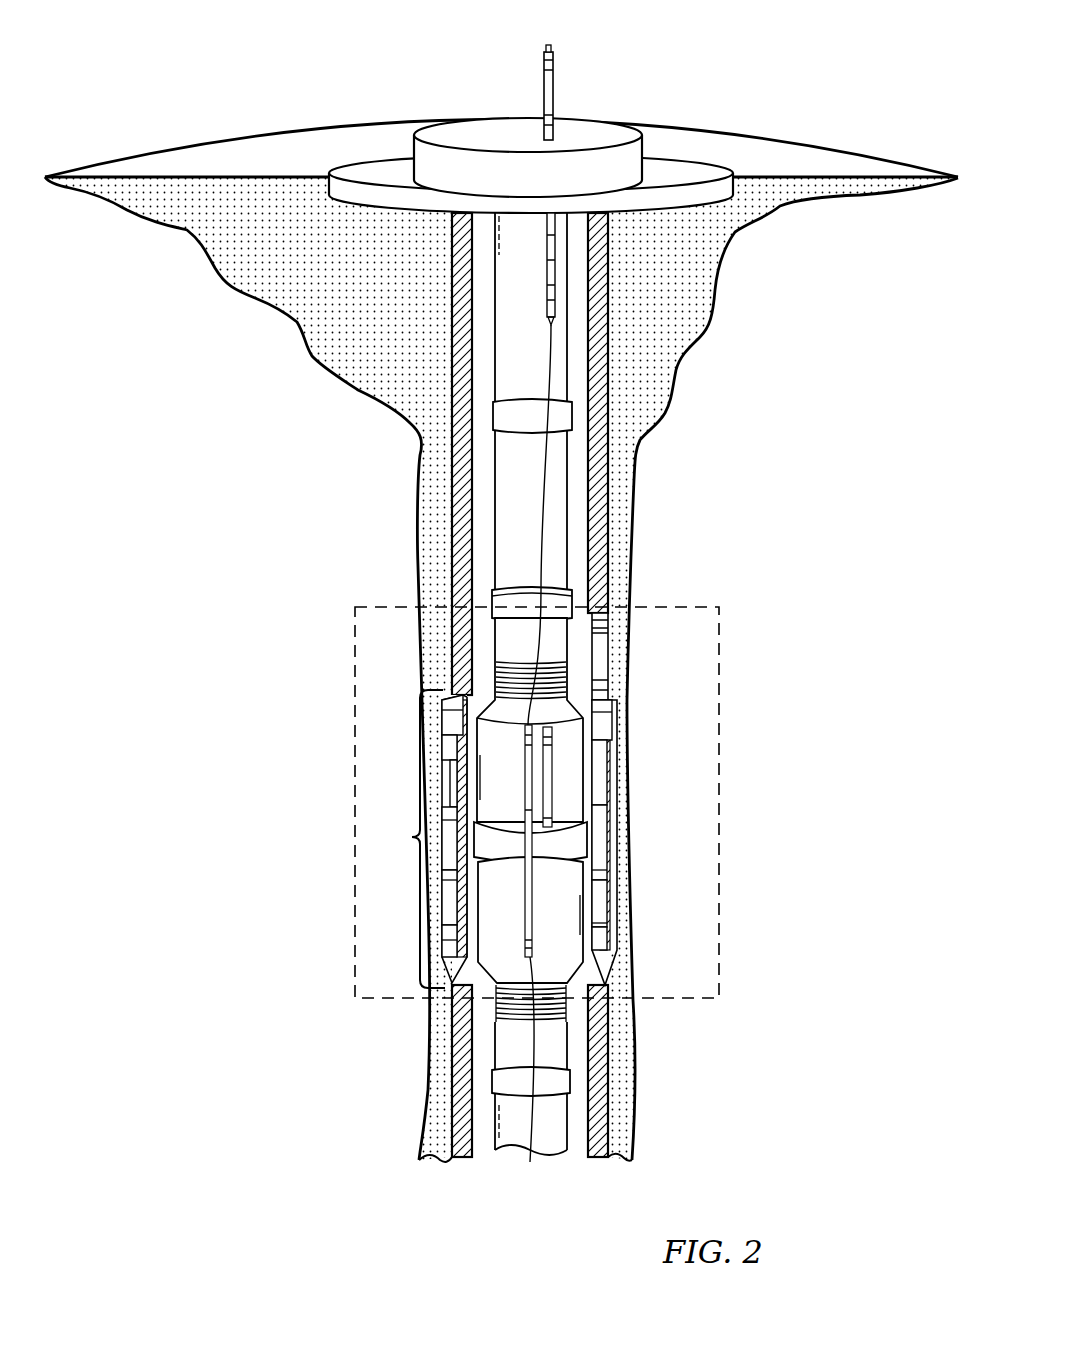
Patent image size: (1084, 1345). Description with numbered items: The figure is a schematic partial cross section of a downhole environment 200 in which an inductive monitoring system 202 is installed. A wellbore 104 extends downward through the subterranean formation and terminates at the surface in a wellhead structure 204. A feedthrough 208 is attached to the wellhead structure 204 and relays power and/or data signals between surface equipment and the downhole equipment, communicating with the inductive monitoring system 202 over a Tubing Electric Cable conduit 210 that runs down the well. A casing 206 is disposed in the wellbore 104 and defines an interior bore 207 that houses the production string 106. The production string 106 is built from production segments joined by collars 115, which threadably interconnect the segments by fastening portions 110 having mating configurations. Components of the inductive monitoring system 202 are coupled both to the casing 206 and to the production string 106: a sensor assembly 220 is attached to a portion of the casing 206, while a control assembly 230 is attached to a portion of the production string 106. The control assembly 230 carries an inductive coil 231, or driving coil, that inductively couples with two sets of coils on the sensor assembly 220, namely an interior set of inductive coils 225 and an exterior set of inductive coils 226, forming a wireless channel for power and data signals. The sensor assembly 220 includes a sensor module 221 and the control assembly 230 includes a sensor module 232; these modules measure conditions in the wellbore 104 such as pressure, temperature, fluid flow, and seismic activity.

The downhole environment 200 is at (818, 41).
The wellbore 104 is at (337, 245).
The wellhead structure 204 is at (682, 166).
The feedthrough 208 is at (553, 86).
The casing 206 is at (461, 270).
The interior bore 207 is at (481, 318).
The production string 106 is at (506, 358).
The Tubing Electric Cable conduit 210 is at (548, 357).
The collar 115 is at (506, 418).
The inductive monitoring system 202 is at (709, 634).
The sensor module 221 is at (603, 668).
The sensor module 232 is at (548, 752).
The control assembly 230 is at (565, 787).
The inductive coil 231 is at (527, 847).
The exterior set of inductive coils 226 is at (610, 890).
The interior set of inductive coils 225 is at (610, 933).
The sensor assembly 220 is at (414, 839).
The fastening portion 110 is at (505, 1010).